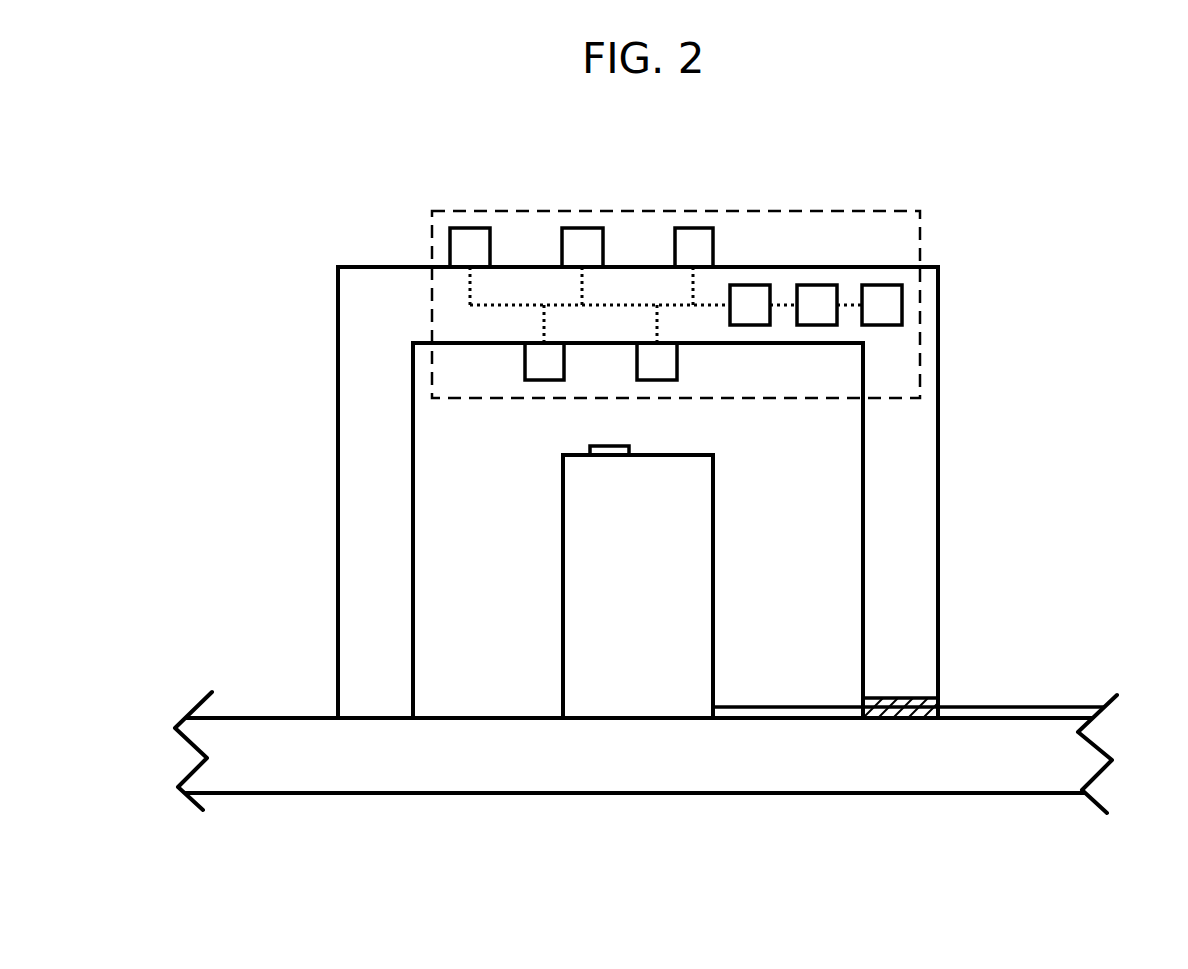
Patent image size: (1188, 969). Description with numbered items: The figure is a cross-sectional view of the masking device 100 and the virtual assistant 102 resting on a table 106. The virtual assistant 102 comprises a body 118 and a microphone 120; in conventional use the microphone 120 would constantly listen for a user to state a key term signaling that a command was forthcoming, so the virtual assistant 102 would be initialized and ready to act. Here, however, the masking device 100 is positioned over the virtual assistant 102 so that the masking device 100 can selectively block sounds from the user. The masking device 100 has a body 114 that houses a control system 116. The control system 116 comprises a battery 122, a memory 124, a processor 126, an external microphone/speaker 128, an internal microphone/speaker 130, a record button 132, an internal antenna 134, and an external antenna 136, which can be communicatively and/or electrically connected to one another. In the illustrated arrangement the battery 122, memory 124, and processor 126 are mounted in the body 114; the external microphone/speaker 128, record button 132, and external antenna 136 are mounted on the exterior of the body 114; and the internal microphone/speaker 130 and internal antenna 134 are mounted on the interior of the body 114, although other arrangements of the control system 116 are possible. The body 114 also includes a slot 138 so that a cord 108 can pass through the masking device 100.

The masking device 100 is at (941, 489).
The virtual assistant 102 is at (560, 569).
The table 106 is at (602, 793).
The cord 108 is at (1052, 707).
The body 114 is at (938, 415).
The control system 116 is at (430, 301).
The body 118 is at (713, 565).
The microphone 120 is at (607, 443).
The battery 122 is at (880, 285).
The memory 124 is at (817, 285).
The processor 126 is at (756, 285).
The external microphone/speaker 128 is at (693, 227).
The internal microphone/speaker 130 is at (662, 382).
The record button 132 is at (582, 227).
The internal antenna 134 is at (550, 380).
The external antenna 136 is at (470, 227).
The slot 138 is at (910, 698).